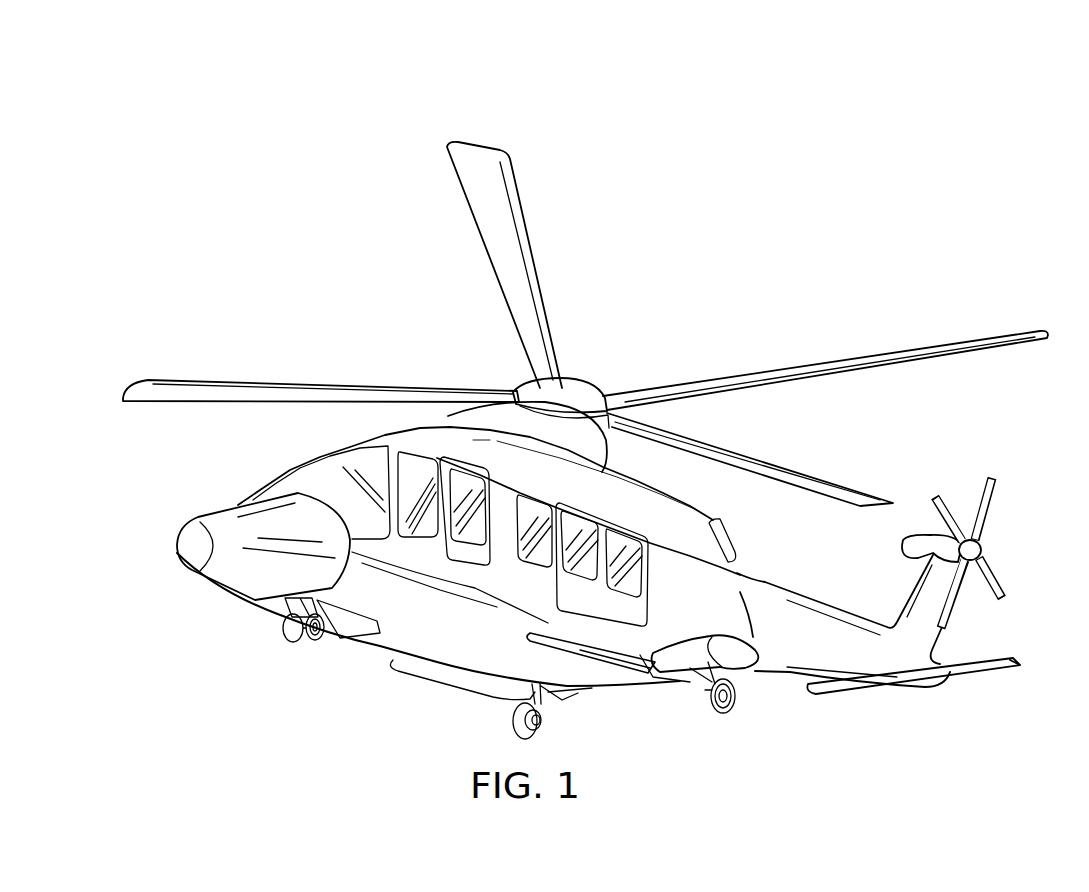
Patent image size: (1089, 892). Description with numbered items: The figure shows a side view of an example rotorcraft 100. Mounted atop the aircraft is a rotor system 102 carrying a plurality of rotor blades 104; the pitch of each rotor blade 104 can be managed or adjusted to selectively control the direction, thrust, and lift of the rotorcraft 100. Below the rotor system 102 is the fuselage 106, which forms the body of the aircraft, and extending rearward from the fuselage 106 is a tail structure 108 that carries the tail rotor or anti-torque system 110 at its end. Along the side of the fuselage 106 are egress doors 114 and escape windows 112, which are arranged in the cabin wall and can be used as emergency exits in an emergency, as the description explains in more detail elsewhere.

The rotorcraft 100 is at (258, 124).
The rotor system 102 is at (600, 352).
The rotor blades 104 is at (812, 378).
The fuselage 106 is at (387, 648).
The tail structure 108 is at (787, 663).
The tail rotor or anti-torque system 110 is at (970, 470).
The escape windows 112 is at (433, 455).
The egress doors 114 is at (457, 557).